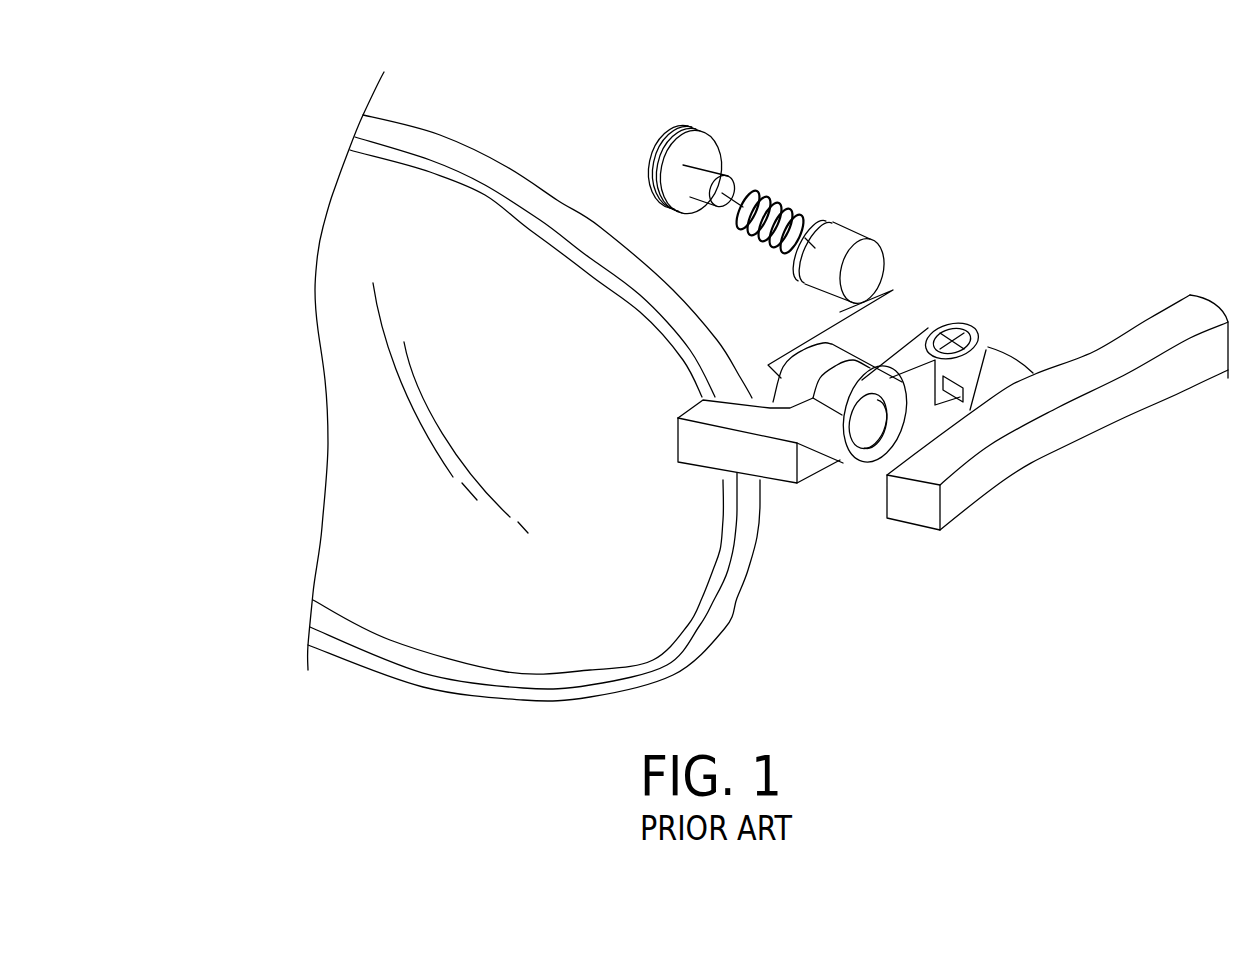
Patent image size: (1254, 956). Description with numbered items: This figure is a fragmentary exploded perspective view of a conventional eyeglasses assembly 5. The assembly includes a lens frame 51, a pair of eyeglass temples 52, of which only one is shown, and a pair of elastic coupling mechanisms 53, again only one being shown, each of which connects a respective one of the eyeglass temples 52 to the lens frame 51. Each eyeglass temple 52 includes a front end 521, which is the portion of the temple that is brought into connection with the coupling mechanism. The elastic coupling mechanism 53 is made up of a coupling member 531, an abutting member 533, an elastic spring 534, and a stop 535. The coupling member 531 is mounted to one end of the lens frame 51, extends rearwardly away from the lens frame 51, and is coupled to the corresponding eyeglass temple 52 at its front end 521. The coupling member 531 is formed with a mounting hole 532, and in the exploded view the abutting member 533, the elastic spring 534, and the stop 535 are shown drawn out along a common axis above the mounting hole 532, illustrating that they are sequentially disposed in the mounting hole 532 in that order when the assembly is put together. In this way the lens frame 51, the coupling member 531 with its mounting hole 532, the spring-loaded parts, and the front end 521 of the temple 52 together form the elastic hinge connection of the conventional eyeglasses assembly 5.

The eyeglasses assembly 5 is at (502, 397).
The lens frame 51 is at (655, 667).
The eyeglass temple 52 is at (1102, 433).
The front end 521 is at (968, 490).
The elastic coupling mechanism 53 is at (843, 336).
The coupling member 531 is at (808, 470).
The mounting hole 532 is at (863, 435).
The abutting member 533 is at (845, 250).
The elastic spring 534 is at (787, 208).
The stop 535 is at (712, 151).